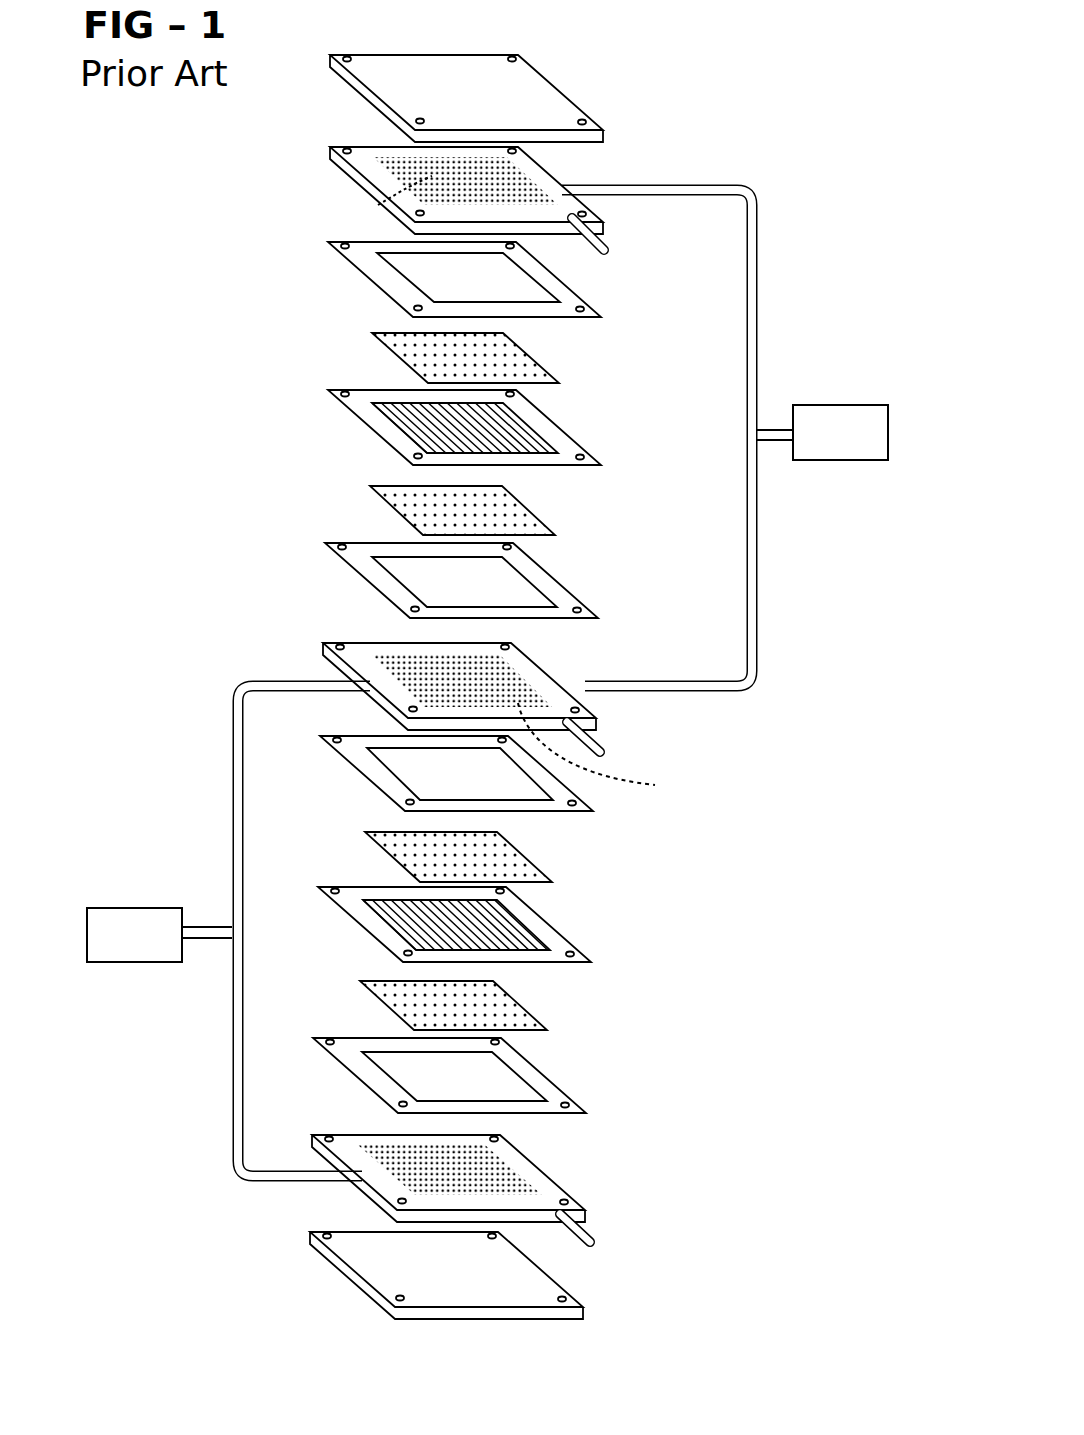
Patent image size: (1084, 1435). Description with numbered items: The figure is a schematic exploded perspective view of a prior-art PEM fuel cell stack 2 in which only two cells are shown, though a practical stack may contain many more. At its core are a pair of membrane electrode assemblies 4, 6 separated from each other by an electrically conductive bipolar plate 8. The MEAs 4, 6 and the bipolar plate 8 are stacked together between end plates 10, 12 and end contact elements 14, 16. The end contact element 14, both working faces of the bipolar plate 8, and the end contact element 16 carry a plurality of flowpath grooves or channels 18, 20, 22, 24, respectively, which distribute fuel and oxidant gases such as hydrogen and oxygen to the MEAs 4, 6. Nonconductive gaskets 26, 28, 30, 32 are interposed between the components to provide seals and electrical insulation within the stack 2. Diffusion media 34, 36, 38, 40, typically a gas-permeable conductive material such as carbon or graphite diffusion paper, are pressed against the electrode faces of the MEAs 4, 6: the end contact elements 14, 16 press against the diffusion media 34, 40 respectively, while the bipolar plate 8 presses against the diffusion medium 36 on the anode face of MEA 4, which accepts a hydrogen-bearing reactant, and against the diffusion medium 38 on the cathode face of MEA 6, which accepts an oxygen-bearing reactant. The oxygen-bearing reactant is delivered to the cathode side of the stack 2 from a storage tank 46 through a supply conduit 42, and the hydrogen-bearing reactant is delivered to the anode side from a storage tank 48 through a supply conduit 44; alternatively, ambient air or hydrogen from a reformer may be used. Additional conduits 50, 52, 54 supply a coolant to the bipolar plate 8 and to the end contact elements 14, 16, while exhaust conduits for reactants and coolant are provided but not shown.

The PEM fuel cell stack 2 is at (798, 175).
The membrane electrode assembly 4 is at (362, 430).
The membrane electrode assembly 6 is at (562, 931).
The bipolar plate 8 is at (474, 703).
The end plate 10 is at (352, 91).
The end plate 12 is at (554, 1280).
The end contact element 14 is at (421, 193).
The end contact element 16 is at (501, 1174).
The flowpath channels 18 is at (378, 205).
The flowpath channels 20 is at (395, 655).
The flowpath channels 22 is at (604, 750).
The flowpath channels 24 is at (500, 1162).
The nonconductive gasket 26 is at (368, 275).
The nonconductive gasket 28 is at (365, 580).
The nonconductive gasket 30 is at (583, 806).
The nonconductive gasket 32 is at (570, 1092).
The diffusion medium 34 is at (393, 350).
The diffusion medium 36 is at (395, 508).
The diffusion medium 38 is at (540, 855).
The diffusion medium 40 is at (535, 1003).
The supply conduit 42 is at (750, 620).
The supply conduit 44 is at (240, 752).
The storage tank 46 is at (853, 405).
The storage tank 48 is at (132, 908).
The coolant conduit 50 is at (608, 238).
The coolant conduit 52 is at (602, 740).
The coolant conduit 54 is at (596, 1240).